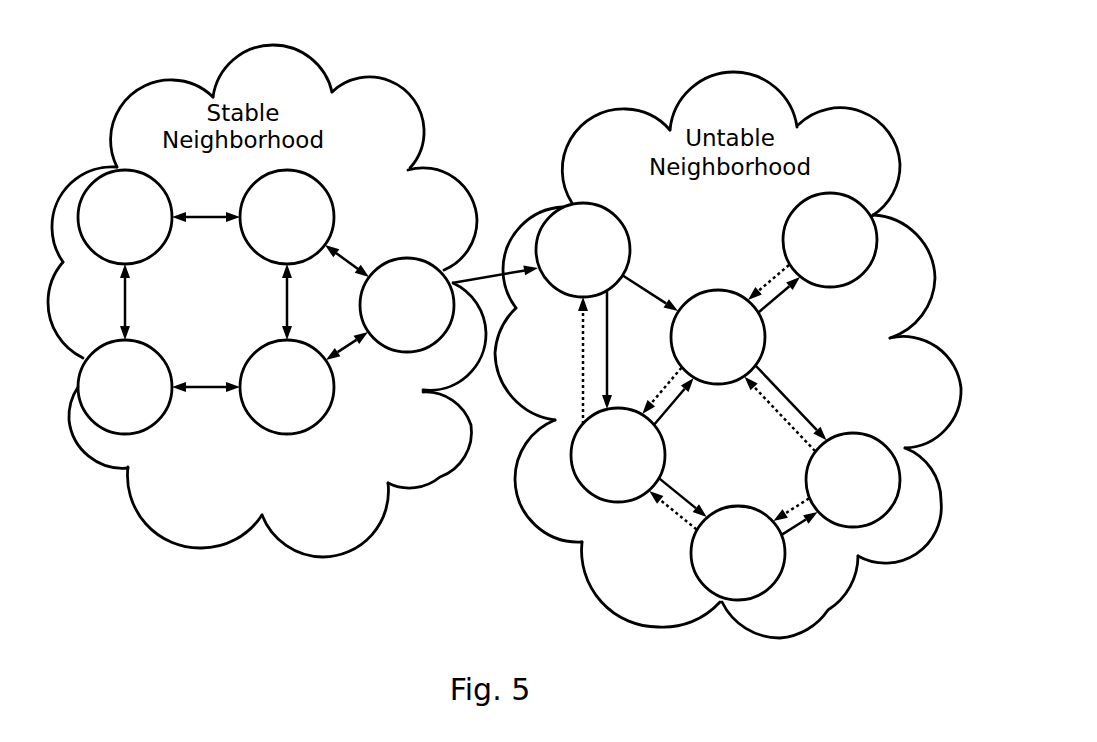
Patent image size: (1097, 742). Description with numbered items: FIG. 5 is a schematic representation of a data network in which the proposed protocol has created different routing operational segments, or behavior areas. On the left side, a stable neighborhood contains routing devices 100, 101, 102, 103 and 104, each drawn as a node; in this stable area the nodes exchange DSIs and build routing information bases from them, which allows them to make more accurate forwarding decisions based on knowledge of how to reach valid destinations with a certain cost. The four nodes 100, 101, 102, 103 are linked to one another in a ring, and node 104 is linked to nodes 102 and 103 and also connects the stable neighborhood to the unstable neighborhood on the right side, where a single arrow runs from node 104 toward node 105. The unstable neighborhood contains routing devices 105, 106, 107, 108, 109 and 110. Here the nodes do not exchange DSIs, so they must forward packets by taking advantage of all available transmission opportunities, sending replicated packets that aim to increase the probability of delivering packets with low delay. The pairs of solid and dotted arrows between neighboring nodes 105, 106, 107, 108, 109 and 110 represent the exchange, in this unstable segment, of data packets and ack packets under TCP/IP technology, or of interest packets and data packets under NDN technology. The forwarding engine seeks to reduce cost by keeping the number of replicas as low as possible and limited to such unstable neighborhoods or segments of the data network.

The routing device 100 is at (103, 188).
The routing device 101 is at (147, 420).
The routing device 102 is at (327, 195).
The routing device 103 is at (303, 417).
The routing device 104 is at (417, 268).
The routing device 105 is at (598, 220).
The routing device 106 is at (853, 217).
The routing device 107 is at (765, 335).
The routing device 108 is at (575, 457).
The routing device 109 is at (750, 587).
The routing device 110 is at (862, 512).